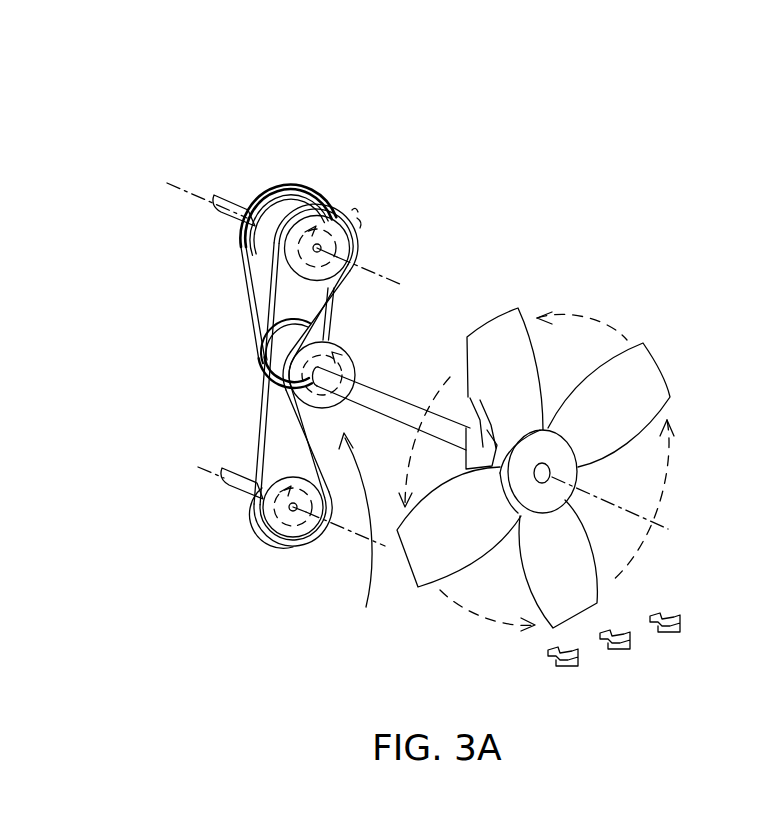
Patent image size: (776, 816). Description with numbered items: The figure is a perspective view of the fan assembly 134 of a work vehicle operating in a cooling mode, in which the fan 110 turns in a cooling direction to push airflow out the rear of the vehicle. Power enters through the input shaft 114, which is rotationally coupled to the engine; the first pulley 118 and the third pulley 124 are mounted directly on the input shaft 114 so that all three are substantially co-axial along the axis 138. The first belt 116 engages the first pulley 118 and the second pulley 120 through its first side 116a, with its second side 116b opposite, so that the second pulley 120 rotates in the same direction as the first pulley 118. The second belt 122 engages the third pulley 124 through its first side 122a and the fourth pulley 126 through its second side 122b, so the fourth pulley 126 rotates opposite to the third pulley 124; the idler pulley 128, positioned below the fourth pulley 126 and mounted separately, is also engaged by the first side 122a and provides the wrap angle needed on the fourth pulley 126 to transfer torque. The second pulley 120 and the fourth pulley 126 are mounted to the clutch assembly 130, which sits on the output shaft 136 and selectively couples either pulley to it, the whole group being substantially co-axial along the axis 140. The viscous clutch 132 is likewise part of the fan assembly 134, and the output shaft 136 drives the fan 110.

The fan 110 is at (638, 388).
The input shaft 114 is at (240, 198).
The first belt 116 is at (320, 286).
The first side 116a is at (343, 332).
The second side 116b is at (247, 300).
The first pulley 118 is at (300, 192).
The second pulley 120 is at (258, 350).
The second belt 122 is at (250, 388).
The first side 122a is at (268, 421).
The second side 122b is at (260, 444).
The third pulley 124 is at (316, 188).
The fourth pulley 126 is at (345, 345).
The idler pulley 128 is at (297, 534).
The clutch assembly 130 is at (362, 535).
The viscous clutch 132 is at (456, 380).
The fan assembly 134 is at (516, 132).
The output shaft 136 is at (405, 401).
The axis 138 is at (192, 186).
The axis 140 is at (682, 495).